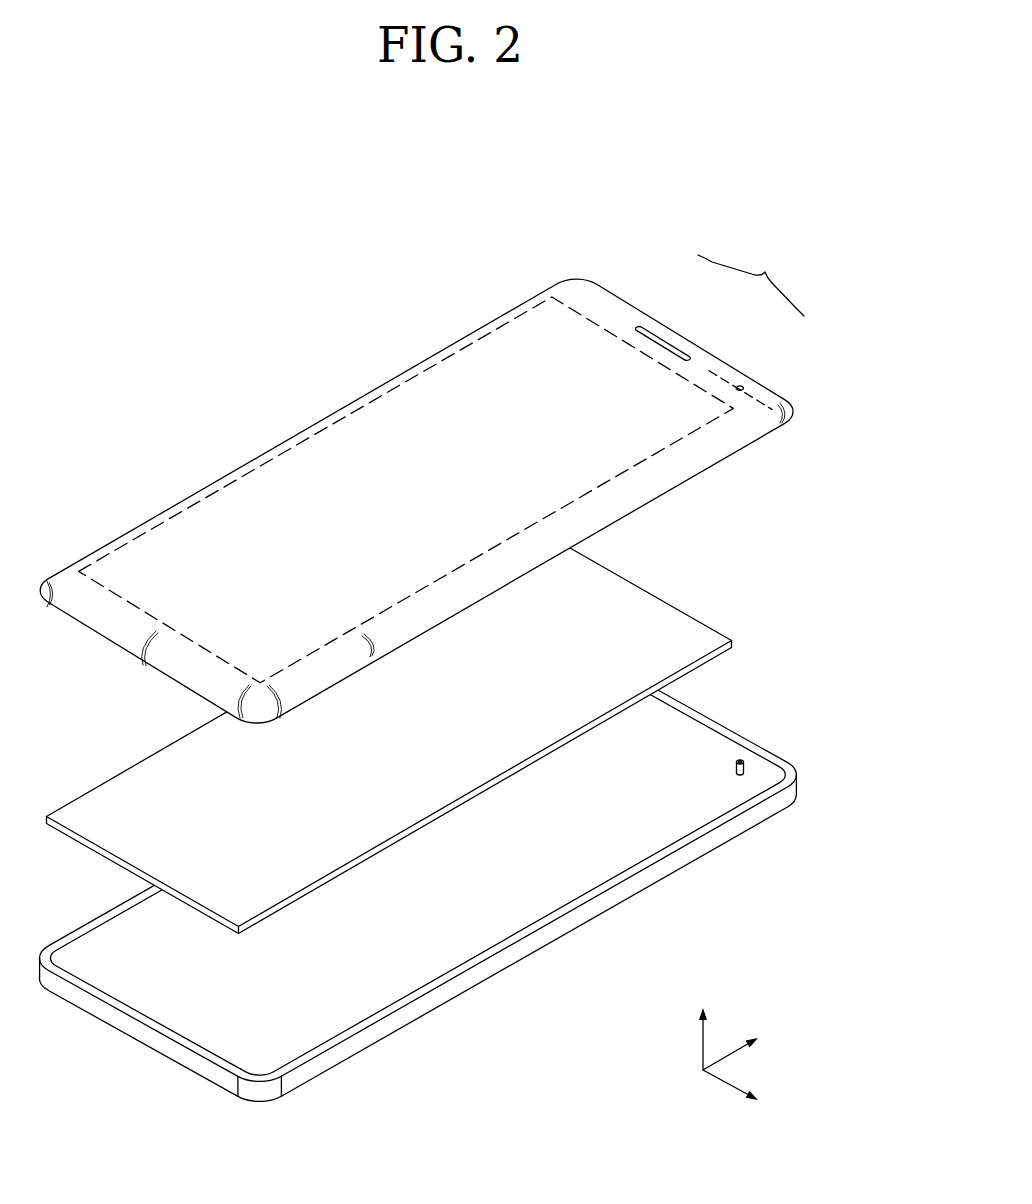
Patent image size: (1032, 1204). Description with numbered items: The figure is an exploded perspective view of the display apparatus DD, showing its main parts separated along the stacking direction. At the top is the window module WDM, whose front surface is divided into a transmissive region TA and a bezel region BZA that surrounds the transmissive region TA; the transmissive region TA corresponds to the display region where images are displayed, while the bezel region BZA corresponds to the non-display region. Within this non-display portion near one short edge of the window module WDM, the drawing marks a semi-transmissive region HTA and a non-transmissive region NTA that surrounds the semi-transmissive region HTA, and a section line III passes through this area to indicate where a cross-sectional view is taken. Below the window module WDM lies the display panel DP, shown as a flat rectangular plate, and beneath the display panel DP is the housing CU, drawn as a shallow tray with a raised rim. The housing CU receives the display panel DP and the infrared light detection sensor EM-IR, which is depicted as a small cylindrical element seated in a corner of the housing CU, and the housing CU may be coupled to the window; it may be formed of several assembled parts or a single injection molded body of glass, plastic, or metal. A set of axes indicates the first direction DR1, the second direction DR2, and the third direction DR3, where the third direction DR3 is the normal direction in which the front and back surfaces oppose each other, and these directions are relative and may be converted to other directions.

The display apparatus DD is at (467, 646).
The window module WDM is at (461, 489).
The transmissive region TA is at (406, 490).
The bezel region BZA is at (751, 282).
The non-transmissive region NTA is at (663, 343).
The semi-transmissive region HTA is at (740, 388).
The section line III-III' III is at (740, 390).
The display panel DP is at (713, 640).
The infrared light detection sensor EM-IR is at (742, 760).
The housing CU is at (461, 876).
The first direction DR1 is at (755, 1094).
The second direction DR2 is at (755, 1046).
The third direction DR3 is at (704, 1026).